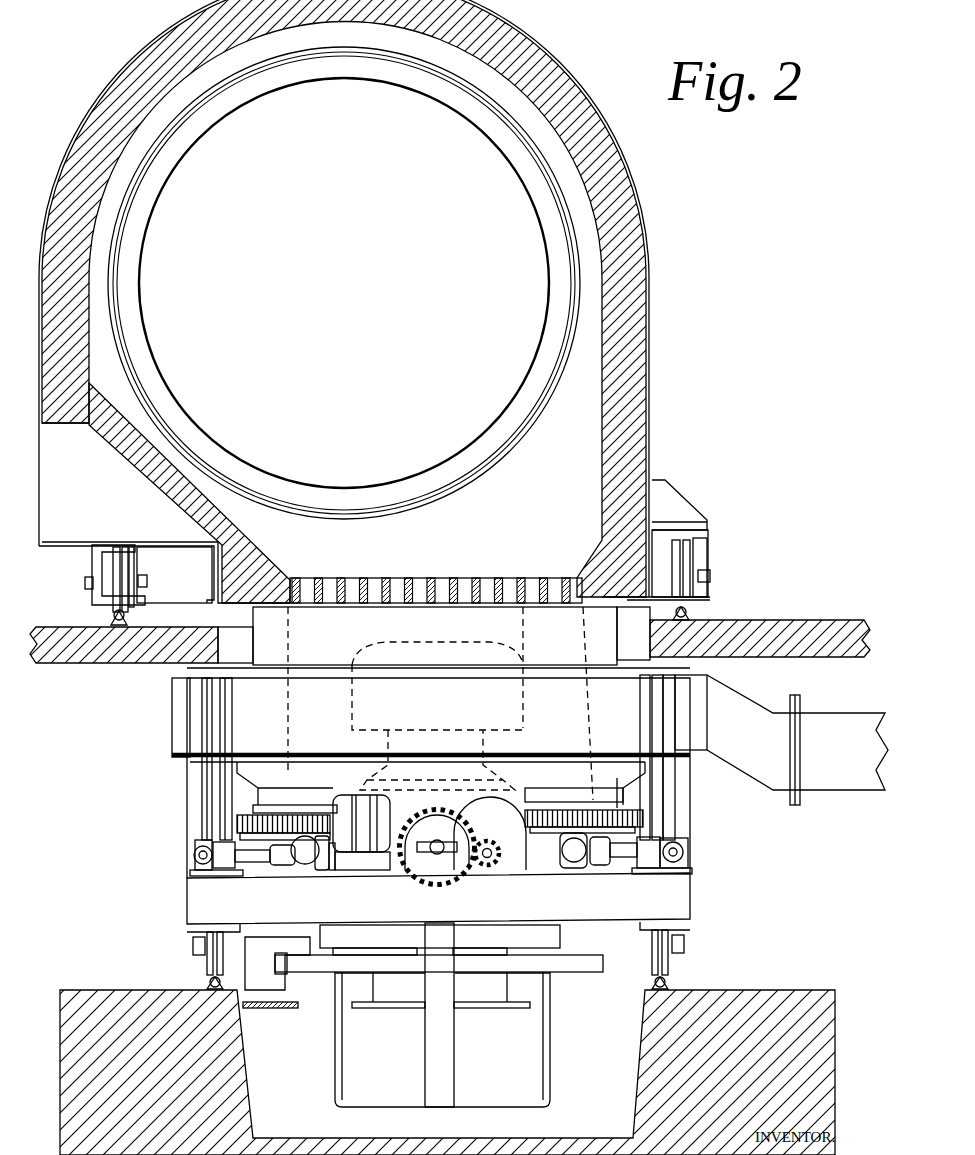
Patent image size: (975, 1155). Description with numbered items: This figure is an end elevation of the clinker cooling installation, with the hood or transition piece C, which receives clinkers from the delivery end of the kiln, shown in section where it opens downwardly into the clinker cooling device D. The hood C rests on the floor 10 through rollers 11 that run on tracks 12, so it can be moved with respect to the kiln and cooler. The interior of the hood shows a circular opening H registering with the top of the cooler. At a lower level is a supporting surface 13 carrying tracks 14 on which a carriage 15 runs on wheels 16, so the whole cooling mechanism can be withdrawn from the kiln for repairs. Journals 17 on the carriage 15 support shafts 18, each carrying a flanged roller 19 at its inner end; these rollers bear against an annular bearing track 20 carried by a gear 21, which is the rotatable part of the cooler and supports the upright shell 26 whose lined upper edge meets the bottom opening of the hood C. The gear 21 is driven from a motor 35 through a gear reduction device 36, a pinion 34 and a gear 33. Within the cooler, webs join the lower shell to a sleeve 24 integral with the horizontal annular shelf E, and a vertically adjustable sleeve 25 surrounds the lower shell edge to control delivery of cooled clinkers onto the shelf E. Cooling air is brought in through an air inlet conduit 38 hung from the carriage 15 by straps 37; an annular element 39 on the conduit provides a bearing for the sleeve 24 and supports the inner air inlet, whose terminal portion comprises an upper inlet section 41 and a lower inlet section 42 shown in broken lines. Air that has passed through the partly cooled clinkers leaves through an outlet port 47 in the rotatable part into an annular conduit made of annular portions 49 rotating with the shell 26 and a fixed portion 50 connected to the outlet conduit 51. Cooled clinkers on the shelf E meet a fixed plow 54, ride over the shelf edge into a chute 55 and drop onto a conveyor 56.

The hood or transition piece C is at (640, 310).
The rotatable ring H is at (505, 432).
The clinker cooling device D is at (462, 630).
The annular shelf E is at (575, 970).
The floor 10 is at (88, 655).
The rollers 11 is at (125, 583).
The tracks 12 is at (112, 620).
The supporting surface 13 is at (94, 988).
The tracks 14 is at (208, 978).
The carriage 15 is at (692, 900).
The wheels 16 is at (207, 942).
The journals 17 is at (194, 853).
The shafts 18 is at (258, 862).
The flanged roller 19 is at (327, 865).
The annular bearing track 20 is at (535, 862).
The gear 21 is at (555, 805).
The sleeve 24 is at (510, 1008).
The vertically adjustable sleeve 25 is at (560, 938).
The shell 26 is at (603, 641).
The gear 33 is at (497, 838).
The pinion 34 is at (410, 865).
The motor 35 is at (362, 806).
The gear reduction device 36 is at (510, 862).
The straps 37 is at (455, 1044).
The air inlet conduit 38 is at (340, 1080).
The annular element 39 is at (398, 1008).
The upper inlet section 41 is at (480, 645).
The lower inlet section 42 is at (515, 790).
The outlet port 47 is at (614, 769).
The annular portions 49 is at (540, 672).
The fixed portion 50 is at (305, 695).
The outlet conduit 51 is at (797, 740).
The fixed plow 54 is at (312, 946).
The chute 55 is at (288, 979).
The conveyor 56 is at (280, 1010).